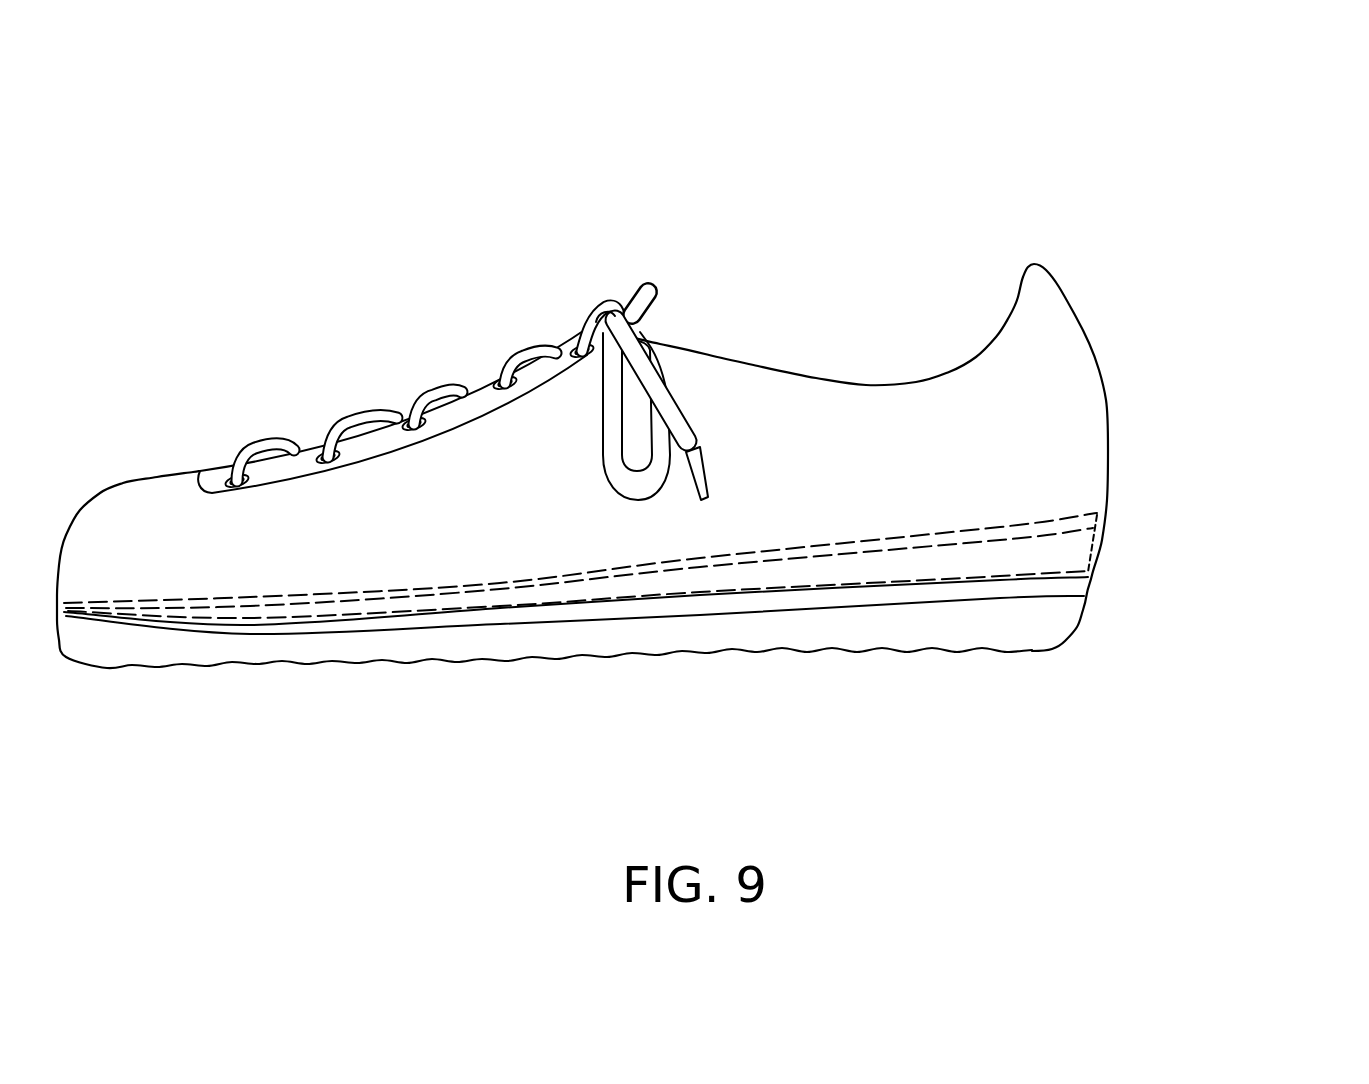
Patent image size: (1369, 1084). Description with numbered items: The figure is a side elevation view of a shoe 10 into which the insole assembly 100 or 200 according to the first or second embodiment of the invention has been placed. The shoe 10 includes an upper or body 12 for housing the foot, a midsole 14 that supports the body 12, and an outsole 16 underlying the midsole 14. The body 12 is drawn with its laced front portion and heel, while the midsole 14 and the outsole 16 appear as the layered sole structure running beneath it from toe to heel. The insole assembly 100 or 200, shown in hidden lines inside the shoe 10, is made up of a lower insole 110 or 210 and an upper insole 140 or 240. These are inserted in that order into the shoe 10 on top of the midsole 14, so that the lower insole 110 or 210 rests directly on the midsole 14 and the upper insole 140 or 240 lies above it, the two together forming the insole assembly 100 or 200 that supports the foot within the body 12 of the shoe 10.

The shoe 10 is at (641, 109).
The upper or body 12 is at (572, 415).
The midsole 14 is at (371, 622).
The outsole 16 is at (814, 632).
The insole assembly 100 is at (703, 422).
The insole assembly 200 is at (703, 422).
The upper insole 140 is at (700, 506).
The upper insole 240 is at (1092, 524).
The lower insole 110 is at (705, 586).
The lower insole 210 is at (705, 586).